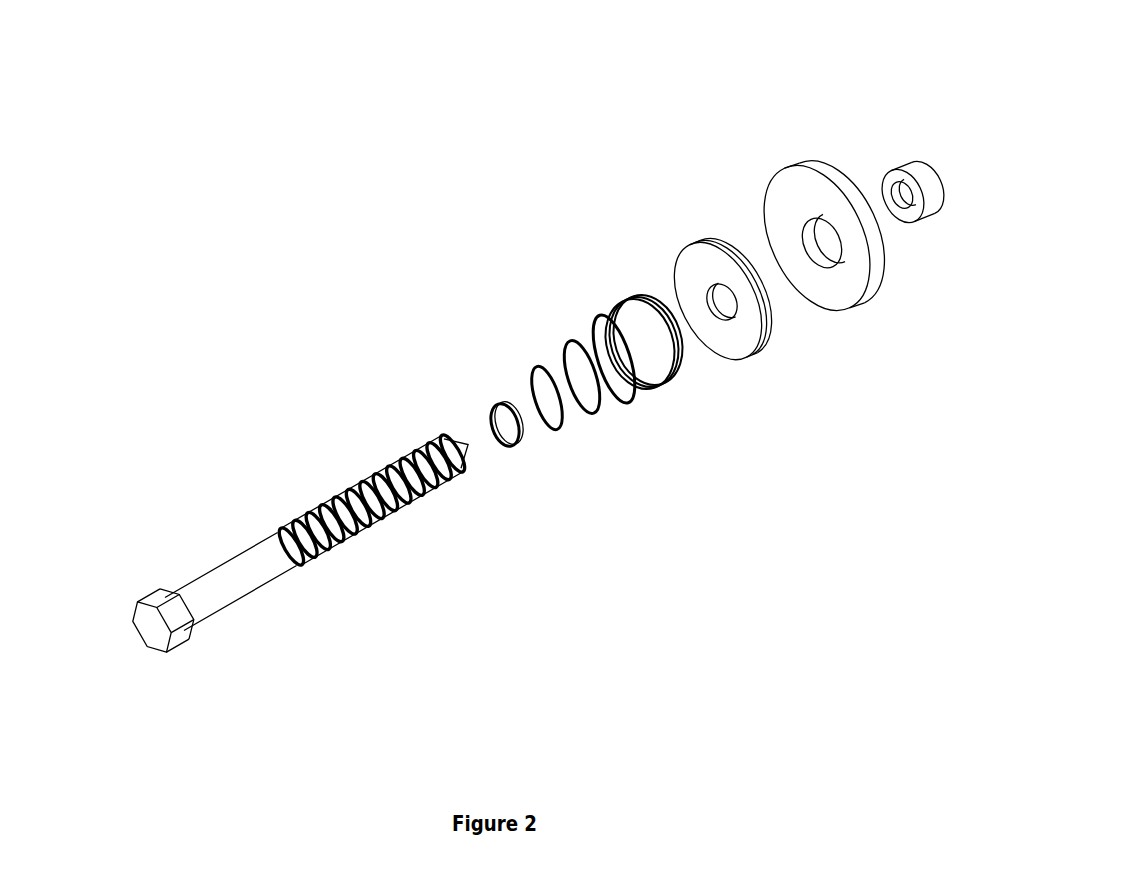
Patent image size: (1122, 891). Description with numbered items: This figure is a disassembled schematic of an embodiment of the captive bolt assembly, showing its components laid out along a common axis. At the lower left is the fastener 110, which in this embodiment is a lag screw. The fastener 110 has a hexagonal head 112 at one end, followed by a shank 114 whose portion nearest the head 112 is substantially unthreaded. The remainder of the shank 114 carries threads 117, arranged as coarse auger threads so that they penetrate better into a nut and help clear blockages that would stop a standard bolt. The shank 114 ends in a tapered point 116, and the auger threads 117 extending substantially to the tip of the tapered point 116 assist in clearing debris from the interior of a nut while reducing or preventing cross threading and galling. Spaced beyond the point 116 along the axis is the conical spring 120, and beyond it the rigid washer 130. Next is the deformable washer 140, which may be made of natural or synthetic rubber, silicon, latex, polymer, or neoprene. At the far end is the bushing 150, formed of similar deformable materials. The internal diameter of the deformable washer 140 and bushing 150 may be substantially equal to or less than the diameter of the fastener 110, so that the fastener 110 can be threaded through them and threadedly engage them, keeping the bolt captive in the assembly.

The fastener 110 is at (312, 556).
The fastener head 112 is at (155, 635).
The shank 114 is at (272, 572).
The tapered point 116 is at (464, 448).
The threads 117 is at (380, 518).
The conical spring 120 is at (568, 343).
The rigid washer 130 is at (688, 240).
The deformable washer 140 is at (775, 183).
The bushing 150 is at (900, 160).